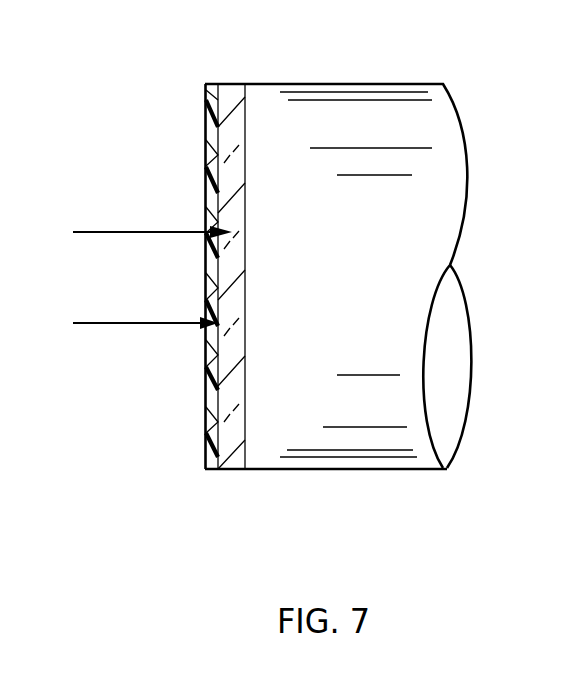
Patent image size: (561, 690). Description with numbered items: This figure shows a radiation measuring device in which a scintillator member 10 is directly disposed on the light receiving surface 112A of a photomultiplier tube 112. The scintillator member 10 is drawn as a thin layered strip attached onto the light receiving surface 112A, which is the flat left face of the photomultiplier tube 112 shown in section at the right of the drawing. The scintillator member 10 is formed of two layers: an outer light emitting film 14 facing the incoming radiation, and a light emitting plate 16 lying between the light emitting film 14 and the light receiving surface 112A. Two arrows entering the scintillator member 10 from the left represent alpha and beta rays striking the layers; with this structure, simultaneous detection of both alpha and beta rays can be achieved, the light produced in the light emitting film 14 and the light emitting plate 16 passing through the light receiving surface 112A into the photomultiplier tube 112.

The scintillator member 10 is at (250, 75).
The light emitting film 14 is at (205, 439).
The light emitting plate 16 is at (245, 448).
The photomultiplier tube 112 is at (377, 83).
The light receiving surface 112A is at (243, 382).